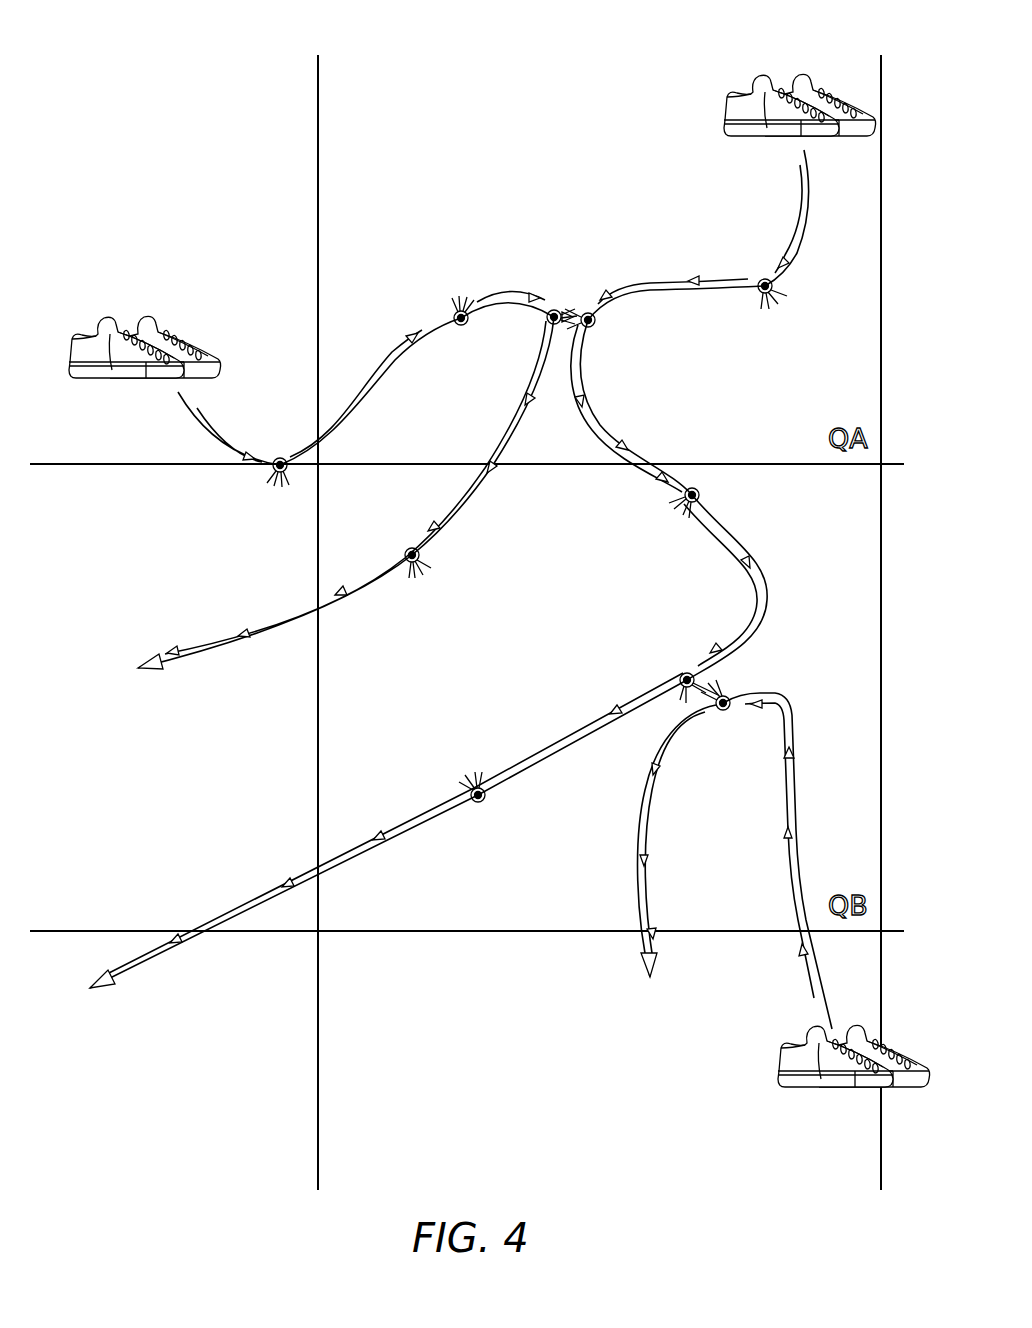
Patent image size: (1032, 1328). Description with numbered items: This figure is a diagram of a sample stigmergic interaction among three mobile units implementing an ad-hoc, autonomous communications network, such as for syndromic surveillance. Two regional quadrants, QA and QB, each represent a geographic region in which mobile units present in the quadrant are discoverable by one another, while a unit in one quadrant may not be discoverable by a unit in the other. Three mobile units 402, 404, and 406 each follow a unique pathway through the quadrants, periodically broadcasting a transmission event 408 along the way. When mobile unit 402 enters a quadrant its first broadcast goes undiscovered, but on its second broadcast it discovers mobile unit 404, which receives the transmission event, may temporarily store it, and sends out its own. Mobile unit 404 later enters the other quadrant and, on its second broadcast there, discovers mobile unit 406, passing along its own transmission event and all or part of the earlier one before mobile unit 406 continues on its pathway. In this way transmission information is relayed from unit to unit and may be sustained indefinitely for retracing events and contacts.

The mobile unit 402 is at (176, 318).
The mobile unit 404 is at (820, 76).
The mobile unit 406 is at (778, 1052).
The transmission event 408 is at (280, 458).